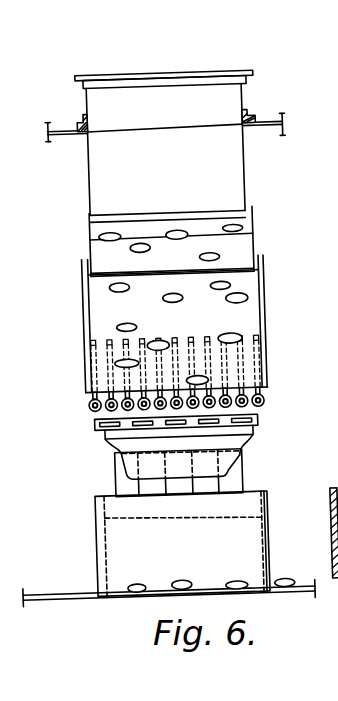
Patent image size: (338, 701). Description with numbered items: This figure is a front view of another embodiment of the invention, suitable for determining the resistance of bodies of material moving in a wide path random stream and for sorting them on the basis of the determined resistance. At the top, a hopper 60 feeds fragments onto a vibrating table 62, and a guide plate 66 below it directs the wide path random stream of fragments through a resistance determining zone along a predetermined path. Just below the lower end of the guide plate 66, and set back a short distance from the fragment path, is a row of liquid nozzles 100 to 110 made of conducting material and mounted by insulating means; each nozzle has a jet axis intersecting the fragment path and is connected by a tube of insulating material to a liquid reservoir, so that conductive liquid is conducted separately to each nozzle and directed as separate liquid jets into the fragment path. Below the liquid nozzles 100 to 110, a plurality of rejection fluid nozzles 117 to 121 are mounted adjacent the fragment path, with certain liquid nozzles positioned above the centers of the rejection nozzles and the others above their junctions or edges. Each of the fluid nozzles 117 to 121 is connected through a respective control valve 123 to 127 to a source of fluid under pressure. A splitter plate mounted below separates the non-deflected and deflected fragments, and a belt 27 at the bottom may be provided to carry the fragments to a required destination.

The hopper 60 is at (236, 99).
The vibrating table 62 is at (242, 249).
The guide plate 66 is at (247, 284).
The liquid nozzle 100 is at (88, 400).
The liquid nozzle 110 is at (264, 397).
The fluid nozzle 121 is at (262, 419).
The fluid nozzle 117 is at (106, 436).
The control valve 123 is at (121, 480).
The control valve 127 is at (241, 477).
The belt 27 is at (68, 566).